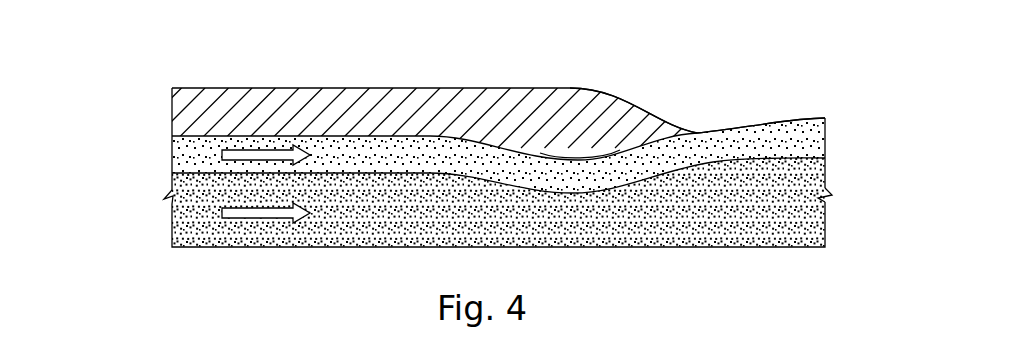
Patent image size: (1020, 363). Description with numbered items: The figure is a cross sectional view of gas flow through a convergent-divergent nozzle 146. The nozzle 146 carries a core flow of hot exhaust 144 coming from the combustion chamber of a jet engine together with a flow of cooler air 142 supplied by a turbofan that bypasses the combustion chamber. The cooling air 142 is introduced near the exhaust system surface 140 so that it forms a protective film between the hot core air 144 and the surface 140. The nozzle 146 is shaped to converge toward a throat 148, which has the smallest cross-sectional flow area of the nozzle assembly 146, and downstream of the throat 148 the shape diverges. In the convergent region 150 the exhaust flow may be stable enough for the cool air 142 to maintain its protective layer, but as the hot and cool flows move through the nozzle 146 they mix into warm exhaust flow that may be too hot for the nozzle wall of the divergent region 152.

The exhaust system surface 140 is at (348, 148).
The cooling air 142 is at (148, 156).
The hot core air 144 is at (148, 226).
The convergent-divergent nozzle 146 is at (637, 66).
The throat 148 is at (581, 142).
The convergent region 150 is at (507, 126).
The divergent region 152 is at (762, 106).